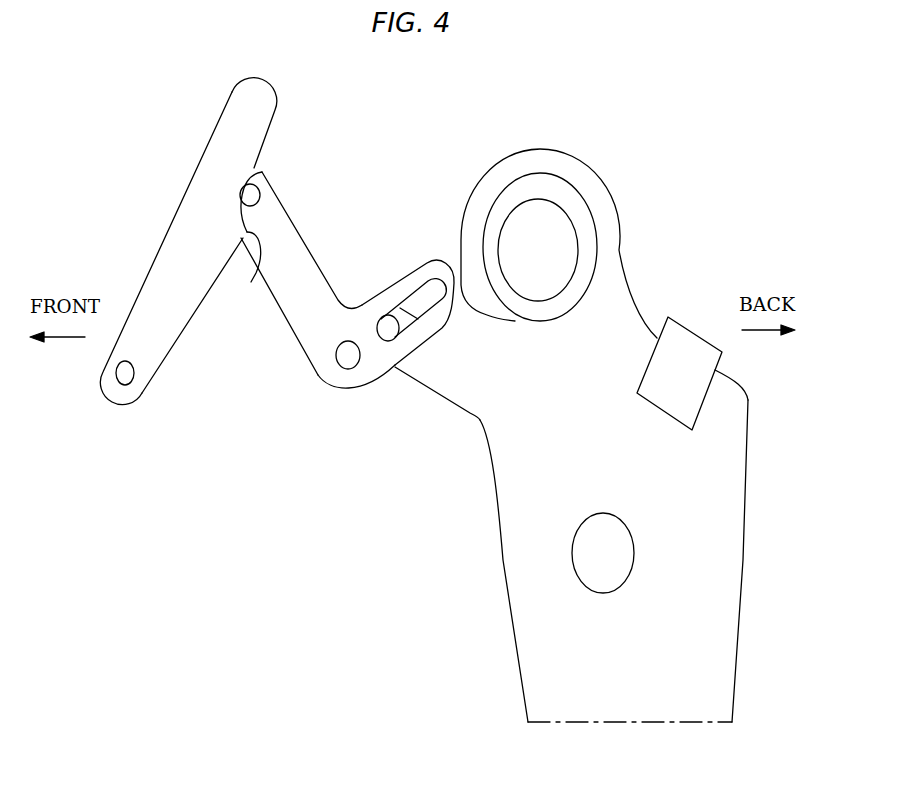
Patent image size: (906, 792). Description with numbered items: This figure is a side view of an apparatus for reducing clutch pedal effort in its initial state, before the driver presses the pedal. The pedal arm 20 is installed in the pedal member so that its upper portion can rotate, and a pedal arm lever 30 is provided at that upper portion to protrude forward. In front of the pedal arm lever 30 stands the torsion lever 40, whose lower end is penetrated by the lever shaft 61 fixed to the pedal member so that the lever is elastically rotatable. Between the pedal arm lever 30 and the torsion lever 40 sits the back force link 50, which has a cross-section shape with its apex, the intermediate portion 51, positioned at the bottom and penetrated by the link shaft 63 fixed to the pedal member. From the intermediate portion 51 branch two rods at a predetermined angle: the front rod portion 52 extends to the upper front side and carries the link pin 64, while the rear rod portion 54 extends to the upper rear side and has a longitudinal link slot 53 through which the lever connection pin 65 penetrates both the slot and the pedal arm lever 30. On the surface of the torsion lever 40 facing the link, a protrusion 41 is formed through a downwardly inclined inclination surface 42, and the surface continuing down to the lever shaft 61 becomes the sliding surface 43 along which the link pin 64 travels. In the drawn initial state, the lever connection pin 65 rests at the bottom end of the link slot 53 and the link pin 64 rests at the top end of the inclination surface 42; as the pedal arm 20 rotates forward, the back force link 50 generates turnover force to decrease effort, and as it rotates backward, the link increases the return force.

The pedal arm 20 is at (530, 612).
The pedal arm lever 30 is at (460, 383).
The torsion lever 40 is at (177, 252).
The protrusion 41 is at (254, 258).
The inclination surface 42 is at (256, 194).
The sliding surface 43 is at (190, 323).
The back force link 50 is at (347, 336).
The intermediate portion 51 is at (358, 378).
The front rod portion 52 is at (280, 240).
The link slot 53 is at (453, 300).
The rear rod portion 54 is at (410, 278).
The lever shaft 61 is at (125, 377).
The link shaft 63 is at (347, 360).
The link pin 64 is at (254, 192).
The lever connection pin 65 is at (391, 323).